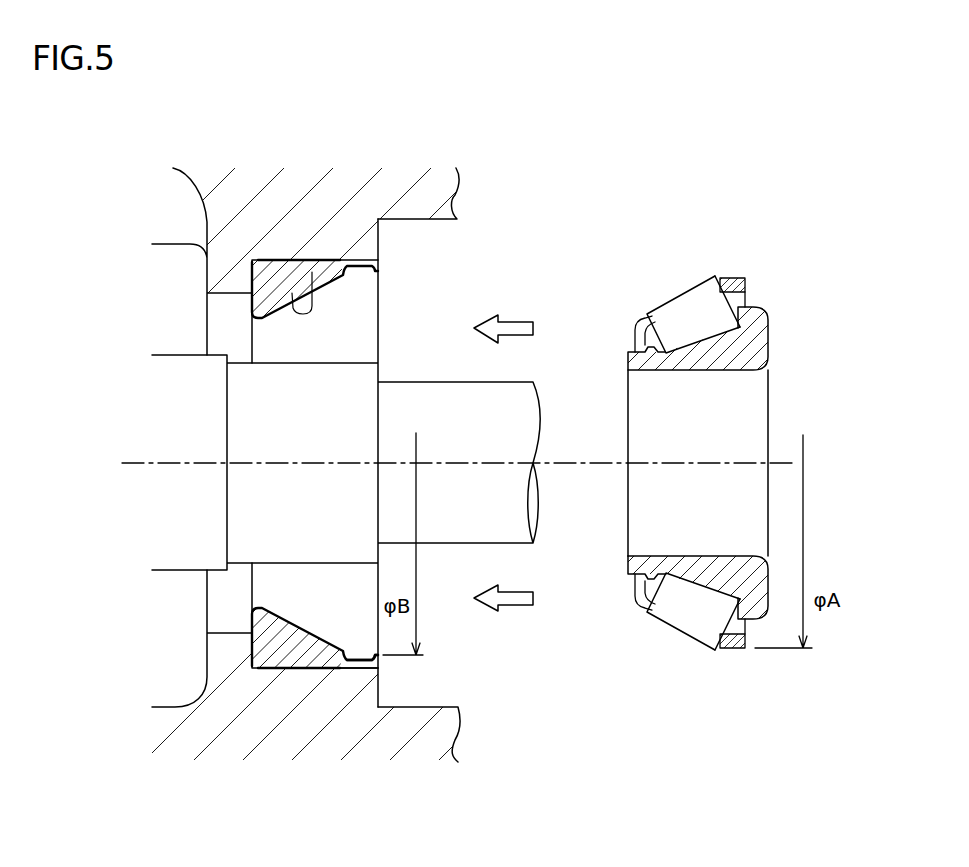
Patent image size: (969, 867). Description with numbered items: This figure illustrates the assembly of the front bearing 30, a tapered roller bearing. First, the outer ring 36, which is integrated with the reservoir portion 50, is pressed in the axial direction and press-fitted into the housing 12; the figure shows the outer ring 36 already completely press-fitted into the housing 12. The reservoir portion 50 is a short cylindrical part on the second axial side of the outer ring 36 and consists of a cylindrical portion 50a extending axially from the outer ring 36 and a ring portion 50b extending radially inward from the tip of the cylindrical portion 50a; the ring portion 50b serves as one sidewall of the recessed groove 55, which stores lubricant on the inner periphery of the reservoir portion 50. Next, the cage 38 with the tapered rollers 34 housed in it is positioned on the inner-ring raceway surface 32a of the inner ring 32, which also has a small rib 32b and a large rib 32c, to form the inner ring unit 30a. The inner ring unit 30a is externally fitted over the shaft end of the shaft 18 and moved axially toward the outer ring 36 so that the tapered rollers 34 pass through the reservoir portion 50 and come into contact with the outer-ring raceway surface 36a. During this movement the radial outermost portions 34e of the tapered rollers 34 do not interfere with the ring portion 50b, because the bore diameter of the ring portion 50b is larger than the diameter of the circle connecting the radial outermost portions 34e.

The housing 12 is at (357, 215).
The shaft 18 is at (176, 356).
The front bearing 30 is at (498, 260).
The inner ring unit 30a is at (671, 642).
The inner ring 32 is at (695, 472).
The inner-ring raceway surface 32a is at (707, 335).
The small rib 32b is at (628, 563).
The large rib 32c is at (753, 620).
The tapered rollers 34 is at (666, 316).
The radial outermost portions 34e is at (715, 277).
The outer ring 36 is at (277, 278).
The outer-ring raceway surface 36a is at (312, 283).
The cage 38 is at (742, 278).
The reservoir portion 50 is at (329, 470).
The cylindrical portion 50a is at (370, 668).
The ring portion 50b is at (380, 661).
The recessed groove 55 is at (352, 632).